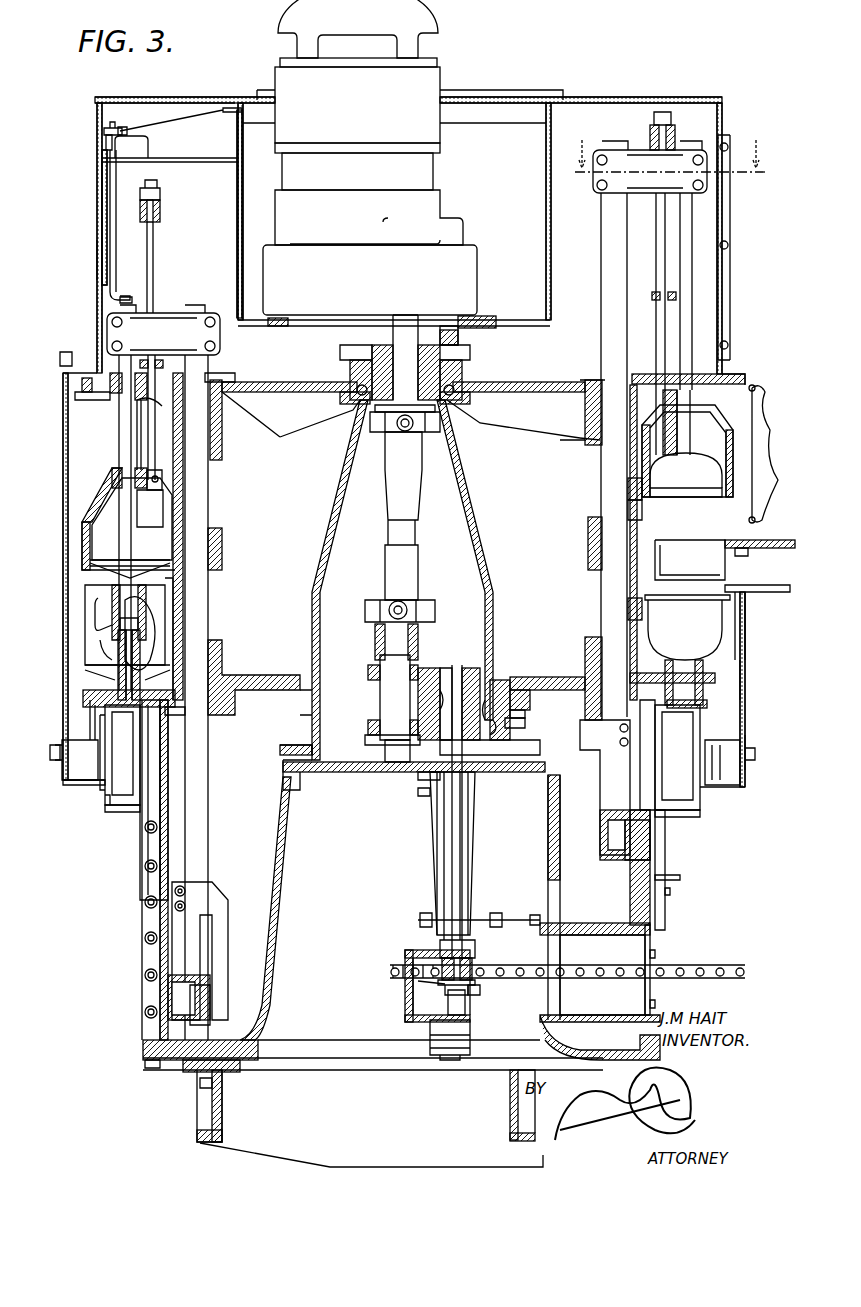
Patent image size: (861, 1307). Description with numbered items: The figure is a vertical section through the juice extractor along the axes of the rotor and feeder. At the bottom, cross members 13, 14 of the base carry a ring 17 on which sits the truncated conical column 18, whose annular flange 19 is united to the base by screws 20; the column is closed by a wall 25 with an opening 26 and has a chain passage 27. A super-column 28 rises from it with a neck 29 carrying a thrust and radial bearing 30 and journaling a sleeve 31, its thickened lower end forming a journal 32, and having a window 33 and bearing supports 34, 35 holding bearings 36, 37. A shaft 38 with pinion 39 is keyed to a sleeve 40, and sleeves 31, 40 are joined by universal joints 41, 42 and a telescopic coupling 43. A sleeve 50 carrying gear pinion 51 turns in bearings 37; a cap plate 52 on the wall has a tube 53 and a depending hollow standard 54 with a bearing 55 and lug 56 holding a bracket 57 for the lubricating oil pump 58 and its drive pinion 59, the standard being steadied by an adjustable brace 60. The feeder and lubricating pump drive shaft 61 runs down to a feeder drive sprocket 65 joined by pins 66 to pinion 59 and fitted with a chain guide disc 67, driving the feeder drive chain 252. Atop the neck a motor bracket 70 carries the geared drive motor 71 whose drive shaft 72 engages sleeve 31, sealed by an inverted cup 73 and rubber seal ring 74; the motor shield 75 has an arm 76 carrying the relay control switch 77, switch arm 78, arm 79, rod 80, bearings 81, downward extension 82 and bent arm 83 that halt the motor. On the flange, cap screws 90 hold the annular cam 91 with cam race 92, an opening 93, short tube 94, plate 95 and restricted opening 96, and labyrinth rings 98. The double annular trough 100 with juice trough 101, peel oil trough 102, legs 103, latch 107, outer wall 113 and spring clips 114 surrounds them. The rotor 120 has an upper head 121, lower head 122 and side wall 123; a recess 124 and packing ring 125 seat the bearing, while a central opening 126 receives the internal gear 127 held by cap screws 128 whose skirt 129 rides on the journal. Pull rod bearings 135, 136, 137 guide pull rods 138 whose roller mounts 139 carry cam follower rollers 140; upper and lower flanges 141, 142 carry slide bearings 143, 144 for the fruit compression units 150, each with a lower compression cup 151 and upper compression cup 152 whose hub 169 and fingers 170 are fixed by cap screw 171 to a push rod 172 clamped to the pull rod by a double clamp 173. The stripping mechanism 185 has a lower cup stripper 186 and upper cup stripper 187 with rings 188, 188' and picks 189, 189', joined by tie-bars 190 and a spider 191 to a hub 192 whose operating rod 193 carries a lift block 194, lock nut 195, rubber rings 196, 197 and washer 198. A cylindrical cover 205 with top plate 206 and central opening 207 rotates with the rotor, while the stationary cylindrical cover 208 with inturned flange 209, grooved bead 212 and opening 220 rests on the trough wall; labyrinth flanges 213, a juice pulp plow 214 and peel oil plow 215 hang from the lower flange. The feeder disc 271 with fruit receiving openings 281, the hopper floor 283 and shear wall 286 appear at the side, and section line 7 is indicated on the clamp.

The section line 7- 7 is at (670, 167).
The channel iron cross member 13 is at (222, 1108).
The channel iron cross member 14 is at (510, 1103).
The ring 17 is at (353, 1072).
The truncated conical column 18 is at (268, 908).
The annular flange 19 is at (143, 1052).
The screws 20 is at (200, 1088).
The wall 25 is at (360, 775).
The opening 26 is at (440, 790).
The chain passage 27 is at (548, 990).
The super-column 28 is at (310, 585).
The neck 29 is at (470, 352).
The thrust and radial bearing 30 is at (458, 368).
The sleeve 31 is at (415, 345).
The journal 32 is at (318, 752).
The window 33 is at (492, 610).
The bearing support 34 is at (424, 665).
The bearing support 35 is at (368, 722).
The bearings 36 is at (372, 668).
The bearings 37 is at (440, 668).
The shaft 38 is at (395, 742).
The pinion 39 is at (380, 682).
The sleeve 40 is at (375, 632).
The universal joint 41 is at (425, 432).
The universal joint 42 is at (415, 603).
The telescopic coupling 43 is at (412, 500).
The sleeve 50 is at (458, 668).
The gear pinion 51 is at (492, 680).
The cap plate 52 is at (425, 772).
The tube 53 is at (515, 743).
The hollow standard 54 is at (472, 838).
The bearing 55 is at (470, 950).
The lug 56 is at (430, 948).
The bracket 57 is at (405, 1003).
The lubricating oil pump 58 is at (430, 1030).
The drive pinion 59 is at (472, 988).
The adjustable brace 60 is at (420, 912).
The feeder and lubricating pump drive shaft 61 is at (445, 862).
The feeder drive sprocket 65 is at (475, 966).
The pins 66 is at (440, 992).
The chain guide disc 67 is at (430, 983).
The motor bracket 70 is at (488, 326).
The geared drive motor 71 is at (478, 266).
The drive shaft 72 is at (385, 345).
The inverted cup 73 is at (448, 330).
The rubber seal ring 74 is at (460, 345).
The motor shield 75 is at (547, 182).
The arm 76 is at (225, 150).
The relay control switch 77 is at (152, 158).
The switch arm 78 is at (127, 128).
The arm 79 is at (118, 128).
The rod 80 is at (105, 143).
The bearings 81 is at (103, 160).
The downward extension 82 is at (102, 240).
The arm 83 is at (113, 296).
The cap screws 90 is at (153, 1068).
The annular cam 91 is at (150, 955).
The cam race 92 is at (608, 822).
The opening 93 is at (630, 935).
The short tube 94 is at (598, 935).
The plate 95 is at (652, 942).
The opening 96 is at (652, 958).
The labyrinth rings 98 is at (170, 788).
The double annular trough 100 is at (118, 790).
The juice trough 101 is at (120, 805).
The peel oil trough 102 is at (105, 790).
The legs 103 is at (665, 852).
The latch 107 is at (668, 893).
The outer wall 113 is at (75, 770).
The spring clips 114 is at (62, 750).
The rotor 120 is at (543, 430).
The upper head 121 is at (548, 382).
The lower head 122 is at (515, 680).
The cylindrical side wall 123 is at (630, 505).
The central recess 124 is at (345, 398).
The packing ring 125 is at (362, 368).
The central opening 126 is at (515, 690).
The internal gear 127 is at (522, 707).
The cap screws 128 is at (522, 718).
The annular skirt 129 is at (300, 725).
The pull rod bearing 135 is at (222, 420).
The pull rod bearing 136 is at (222, 536).
The pull rod bearing 137 is at (222, 700).
The pull rod 138 is at (200, 833).
The roller mount 139 is at (580, 780).
The cam follower roller 140 is at (608, 855).
The upper flange 141 is at (112, 400).
The lower flange 142 is at (85, 690).
The slide bearing 143 is at (137, 400).
The slide bearing 144 is at (158, 440).
The fruit compression unit 150 is at (82, 586).
The lower compression cup 151 is at (100, 658).
The upper compression cup 152 is at (112, 628).
The hub 169 is at (105, 588).
The fingers 170 is at (95, 612).
The cap screw 171 is at (118, 618).
The push rod 172 is at (705, 240).
The double clamp 173 is at (165, 320).
The fruit carcass stripping mechanism 185 is at (72, 543).
The lower cup stripper 186 is at (86, 675).
The upper cup stripper 187 is at (80, 561).
The ring 188 is at (413, 644).
The ring 188' is at (407, 536).
The picks 189 is at (687, 588).
The picks 189' is at (403, 527).
The tie-bars 190 is at (170, 583).
The spider 191 is at (112, 482).
The hub 192 is at (112, 478).
The operating rod 193 is at (658, 250).
The lift block 194 is at (162, 208).
The lock nut 195 is at (158, 192).
The rubber ring 196 is at (160, 220).
The rubber ring 197 is at (668, 300).
The washer 198 is at (655, 292).
The cylindrical cover 205 is at (89, 265).
The top plate 206 is at (618, 100).
The central opening 207 is at (548, 96).
The stationary cylindrical cover 208 is at (63, 500).
The inturned flange 209 is at (78, 368).
The grooved bead 212 is at (55, 745).
The labyrinth flanges 213 is at (175, 712).
The juice pulp plow 214 is at (110, 800).
The peel oil plow 215 is at (70, 782).
The opening 220 is at (742, 598).
The feeder drive chain 252 is at (395, 963).
The feeder disc 271 is at (745, 540).
The fruit receiving openings 281 is at (710, 570).
The floor 283 is at (750, 600).
The deflecting or shear wall 286 is at (758, 412).